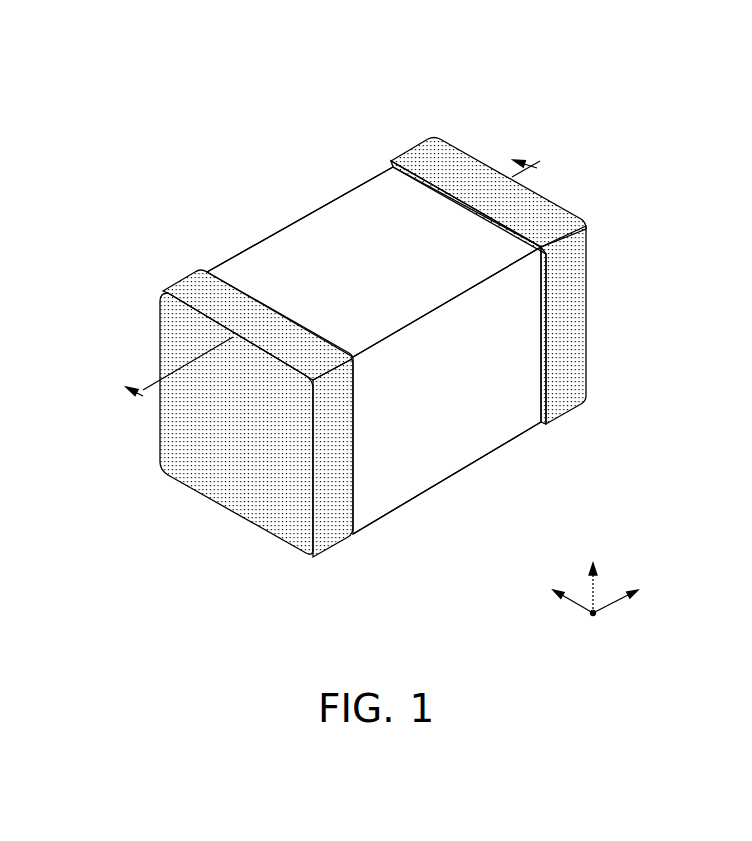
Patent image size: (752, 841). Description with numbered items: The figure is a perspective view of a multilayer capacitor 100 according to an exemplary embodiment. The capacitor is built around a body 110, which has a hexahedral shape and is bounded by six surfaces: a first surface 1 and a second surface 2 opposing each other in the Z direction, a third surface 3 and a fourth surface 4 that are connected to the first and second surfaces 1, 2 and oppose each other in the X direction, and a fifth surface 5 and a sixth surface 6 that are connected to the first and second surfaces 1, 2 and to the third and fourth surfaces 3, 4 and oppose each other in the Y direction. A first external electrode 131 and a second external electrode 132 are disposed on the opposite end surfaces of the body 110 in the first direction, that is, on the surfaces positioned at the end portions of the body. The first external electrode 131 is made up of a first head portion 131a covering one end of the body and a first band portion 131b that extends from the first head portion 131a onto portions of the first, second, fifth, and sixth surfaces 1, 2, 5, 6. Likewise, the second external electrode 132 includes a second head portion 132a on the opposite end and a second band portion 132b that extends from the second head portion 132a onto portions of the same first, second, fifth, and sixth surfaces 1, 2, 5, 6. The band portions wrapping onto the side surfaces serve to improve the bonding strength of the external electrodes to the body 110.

The multilayer capacitor 100 is at (163, 41).
The body 110 is at (323, 225).
The first surface 1 is at (427, 470).
The second surface 2 is at (377, 198).
The third surface 3 is at (244, 496).
The fourth surface 4 is at (577, 303).
The fifth surface 5 is at (494, 426).
The sixth surface 6 is at (270, 249).
The first external electrode 131 is at (192, 204).
The first head portion 131a is at (173, 338).
The first band portion 131b is at (197, 298).
The second external electrode 132 is at (470, 66).
The second head portion 132a is at (457, 145).
The second band portion 132b is at (427, 158).